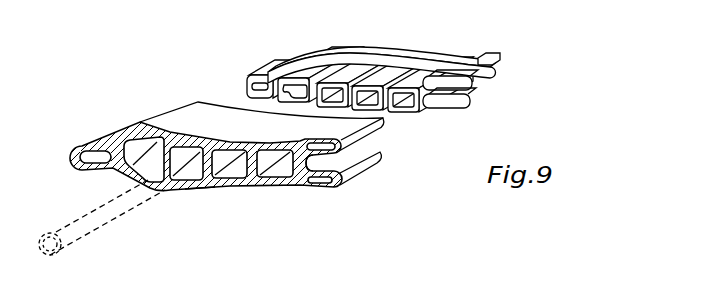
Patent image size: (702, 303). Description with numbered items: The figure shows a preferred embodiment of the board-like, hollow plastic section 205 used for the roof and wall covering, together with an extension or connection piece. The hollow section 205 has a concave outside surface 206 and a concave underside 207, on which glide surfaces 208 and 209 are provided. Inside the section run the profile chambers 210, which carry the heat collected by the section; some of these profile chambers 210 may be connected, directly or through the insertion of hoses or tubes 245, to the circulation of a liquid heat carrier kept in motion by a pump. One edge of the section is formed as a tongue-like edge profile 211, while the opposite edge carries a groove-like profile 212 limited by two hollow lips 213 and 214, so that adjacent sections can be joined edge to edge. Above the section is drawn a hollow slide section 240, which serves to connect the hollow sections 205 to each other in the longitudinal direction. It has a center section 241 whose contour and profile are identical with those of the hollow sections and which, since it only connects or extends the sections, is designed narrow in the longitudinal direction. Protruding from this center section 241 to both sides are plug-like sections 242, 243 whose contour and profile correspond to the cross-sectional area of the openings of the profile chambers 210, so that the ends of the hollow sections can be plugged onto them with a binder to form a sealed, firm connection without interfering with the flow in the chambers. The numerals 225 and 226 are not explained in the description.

The hollow section 205 is at (137, 112).
The concave outside surface 206 is at (187, 120).
The concave underside 207 is at (203, 192).
The glide surface 208 is at (312, 190).
The glide surface 209 is at (150, 192).
The profile chambers 210 is at (270, 172).
The tongue-like edge profile 211 is at (82, 145).
The groove-like profile 212 is at (376, 164).
The hollow lip 213 is at (318, 140).
The hollow lip 214 is at (323, 188).
The conductor 225 is at (267, 15).
The conductor 226 is at (312, 6).
The hollow slide section 240 is at (404, 74).
The center section 241 is at (403, 62).
The plug-like section 242 is at (355, 53).
The plug-like section 243 is at (440, 103).
The hoses or tubes 245 is at (77, 236).